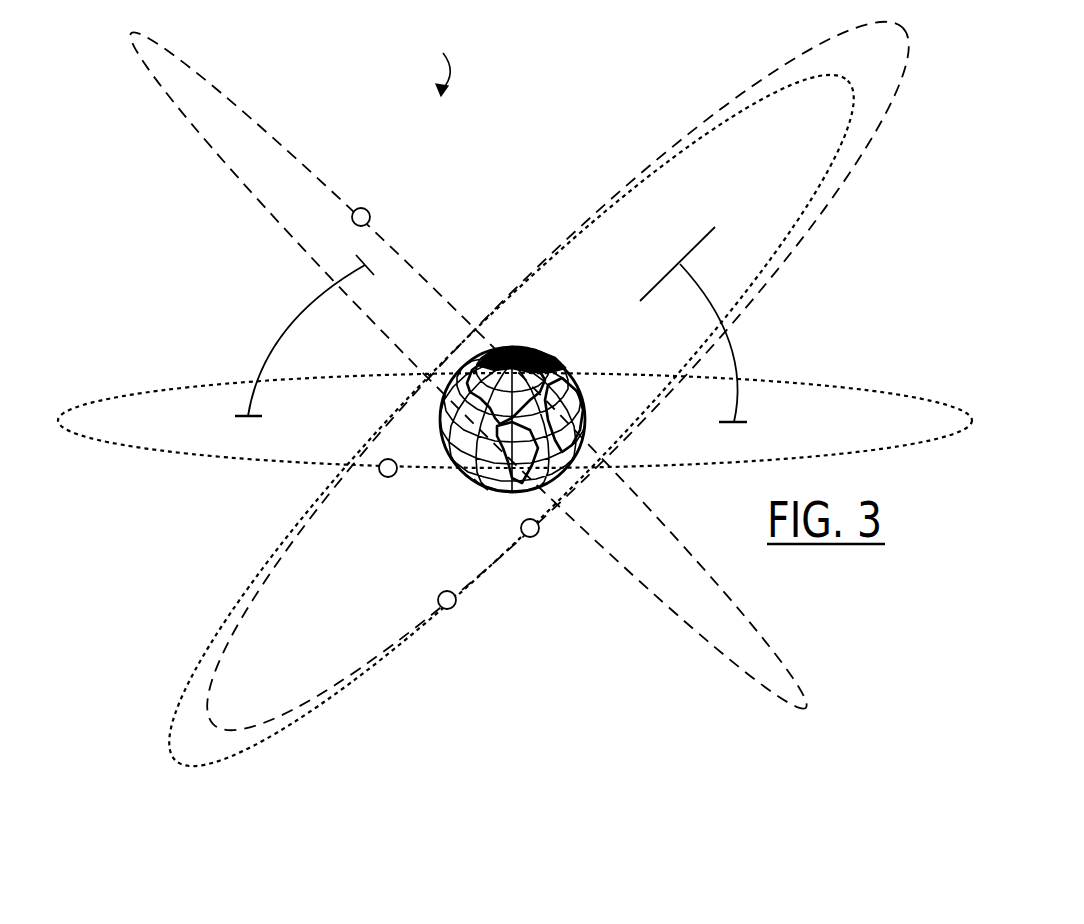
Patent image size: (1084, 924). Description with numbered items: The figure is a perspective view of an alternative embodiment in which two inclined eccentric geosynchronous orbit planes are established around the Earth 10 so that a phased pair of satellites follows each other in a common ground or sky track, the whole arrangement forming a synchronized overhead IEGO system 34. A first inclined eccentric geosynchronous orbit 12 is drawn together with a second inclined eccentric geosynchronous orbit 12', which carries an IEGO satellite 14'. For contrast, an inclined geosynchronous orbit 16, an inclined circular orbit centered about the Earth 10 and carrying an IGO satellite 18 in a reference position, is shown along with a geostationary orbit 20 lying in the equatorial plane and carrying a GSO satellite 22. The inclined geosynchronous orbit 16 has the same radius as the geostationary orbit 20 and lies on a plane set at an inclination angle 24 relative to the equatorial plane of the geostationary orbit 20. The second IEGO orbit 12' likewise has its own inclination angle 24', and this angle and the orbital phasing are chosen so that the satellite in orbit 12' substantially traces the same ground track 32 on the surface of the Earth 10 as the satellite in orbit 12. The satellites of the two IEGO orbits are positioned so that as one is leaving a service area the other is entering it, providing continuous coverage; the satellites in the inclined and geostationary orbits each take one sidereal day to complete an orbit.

The Earth 10 is at (535, 352).
The inclined eccentric geosynchronous orbit 12 is at (558, 394).
The second inclined eccentric geosynchronous orbit 12' is at (468, 370).
The IEGO satellite 14' is at (476, 370).
The inclined geosynchronous orbit 16 is at (843, 144).
The IGO satellite 18 is at (452, 608).
The geostationary orbit 20 is at (159, 387).
The GSO satellite 22 is at (378, 482).
The inclination angle 24 is at (724, 324).
The inclination angle 24' is at (304, 335).
The ground track 32 is at (473, 482).
The synchronized overhead IEGO system 34 is at (428, 67).